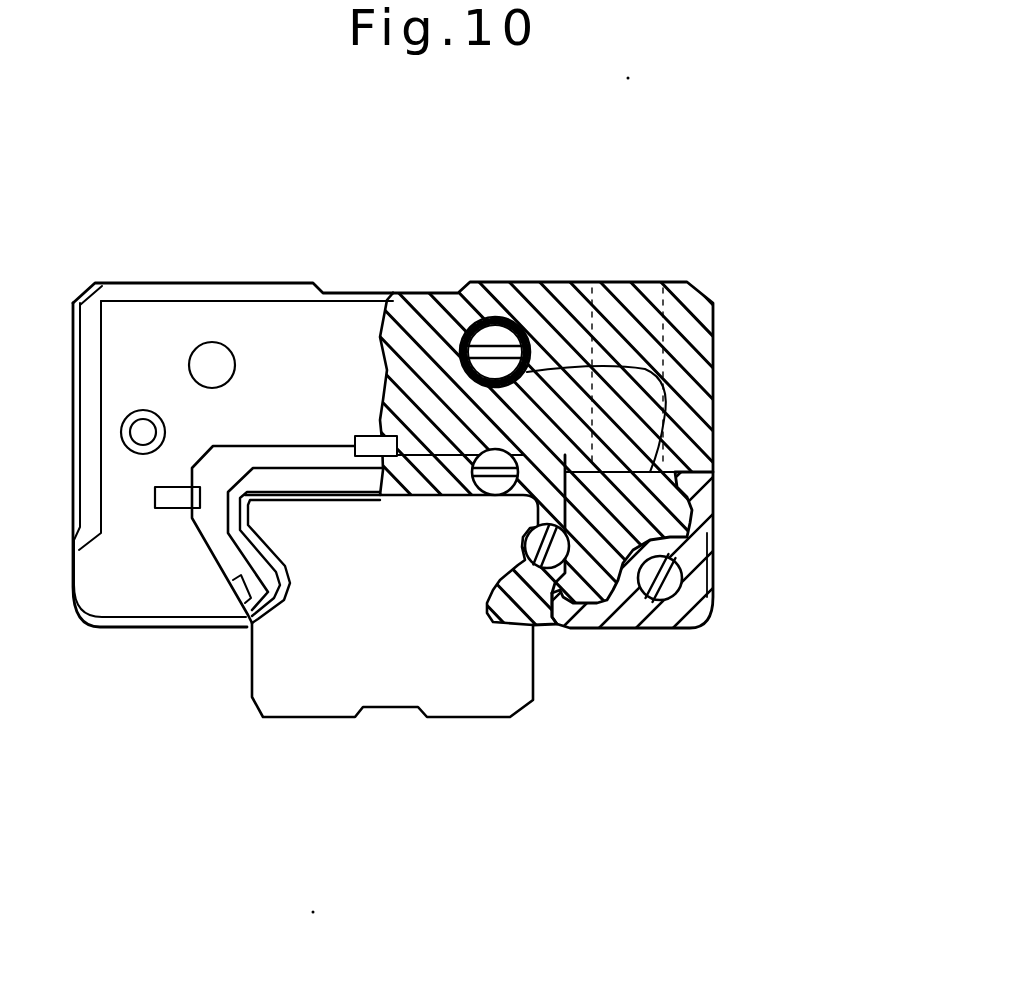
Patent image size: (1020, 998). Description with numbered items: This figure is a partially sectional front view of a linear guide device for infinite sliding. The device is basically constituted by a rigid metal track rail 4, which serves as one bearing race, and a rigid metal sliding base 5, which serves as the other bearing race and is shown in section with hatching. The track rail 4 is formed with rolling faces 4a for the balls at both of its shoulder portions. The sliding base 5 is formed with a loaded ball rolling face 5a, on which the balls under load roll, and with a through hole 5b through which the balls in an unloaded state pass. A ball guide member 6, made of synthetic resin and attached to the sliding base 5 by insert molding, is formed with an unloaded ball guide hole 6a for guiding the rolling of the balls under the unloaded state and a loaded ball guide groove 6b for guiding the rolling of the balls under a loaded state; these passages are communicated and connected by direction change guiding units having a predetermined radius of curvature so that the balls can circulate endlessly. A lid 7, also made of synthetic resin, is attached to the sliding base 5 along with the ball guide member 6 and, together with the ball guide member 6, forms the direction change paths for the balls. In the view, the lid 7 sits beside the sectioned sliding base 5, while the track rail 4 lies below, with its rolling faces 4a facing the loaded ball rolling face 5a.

The track rail 4 is at (478, 722).
The rolling face 4a is at (534, 556).
The sliding base 5 is at (716, 335).
The loaded ball rolling face 5a is at (690, 477).
The through hole 5b is at (663, 398).
The ball guide member 6 is at (716, 592).
The unloaded ball guide hole 6a is at (516, 340).
The loaded ball guide groove 6b is at (463, 452).
The lid 7 is at (202, 280).